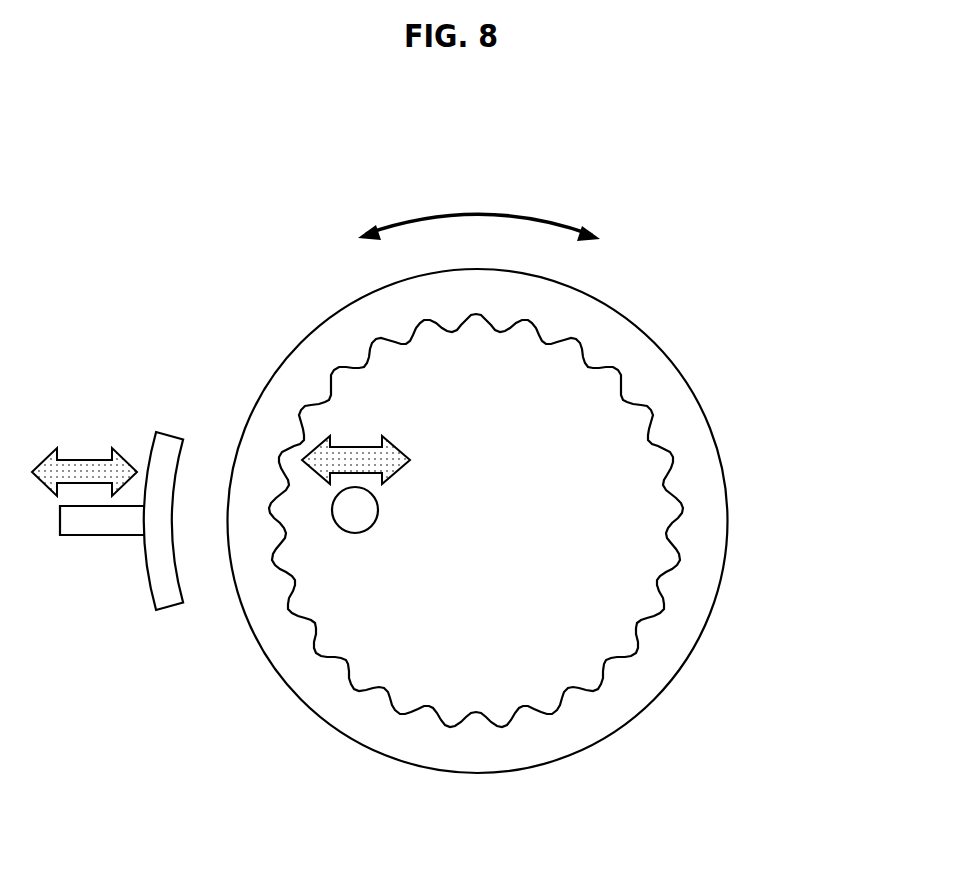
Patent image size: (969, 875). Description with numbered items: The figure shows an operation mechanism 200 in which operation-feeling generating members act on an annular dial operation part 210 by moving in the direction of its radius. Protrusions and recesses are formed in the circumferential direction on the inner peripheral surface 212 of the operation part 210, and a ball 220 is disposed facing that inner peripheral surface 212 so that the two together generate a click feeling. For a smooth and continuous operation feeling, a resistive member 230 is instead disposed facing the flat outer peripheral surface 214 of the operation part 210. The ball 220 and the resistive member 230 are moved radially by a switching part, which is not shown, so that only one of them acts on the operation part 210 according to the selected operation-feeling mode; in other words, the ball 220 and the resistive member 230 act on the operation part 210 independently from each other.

The operation mechanism 200 is at (731, 254).
The operation part 210 is at (685, 415).
The inner peripheral surface 212 is at (658, 587).
The outer peripheral surface 214 is at (314, 717).
The ball 220 is at (379, 508).
The resistive member 230 is at (180, 582).